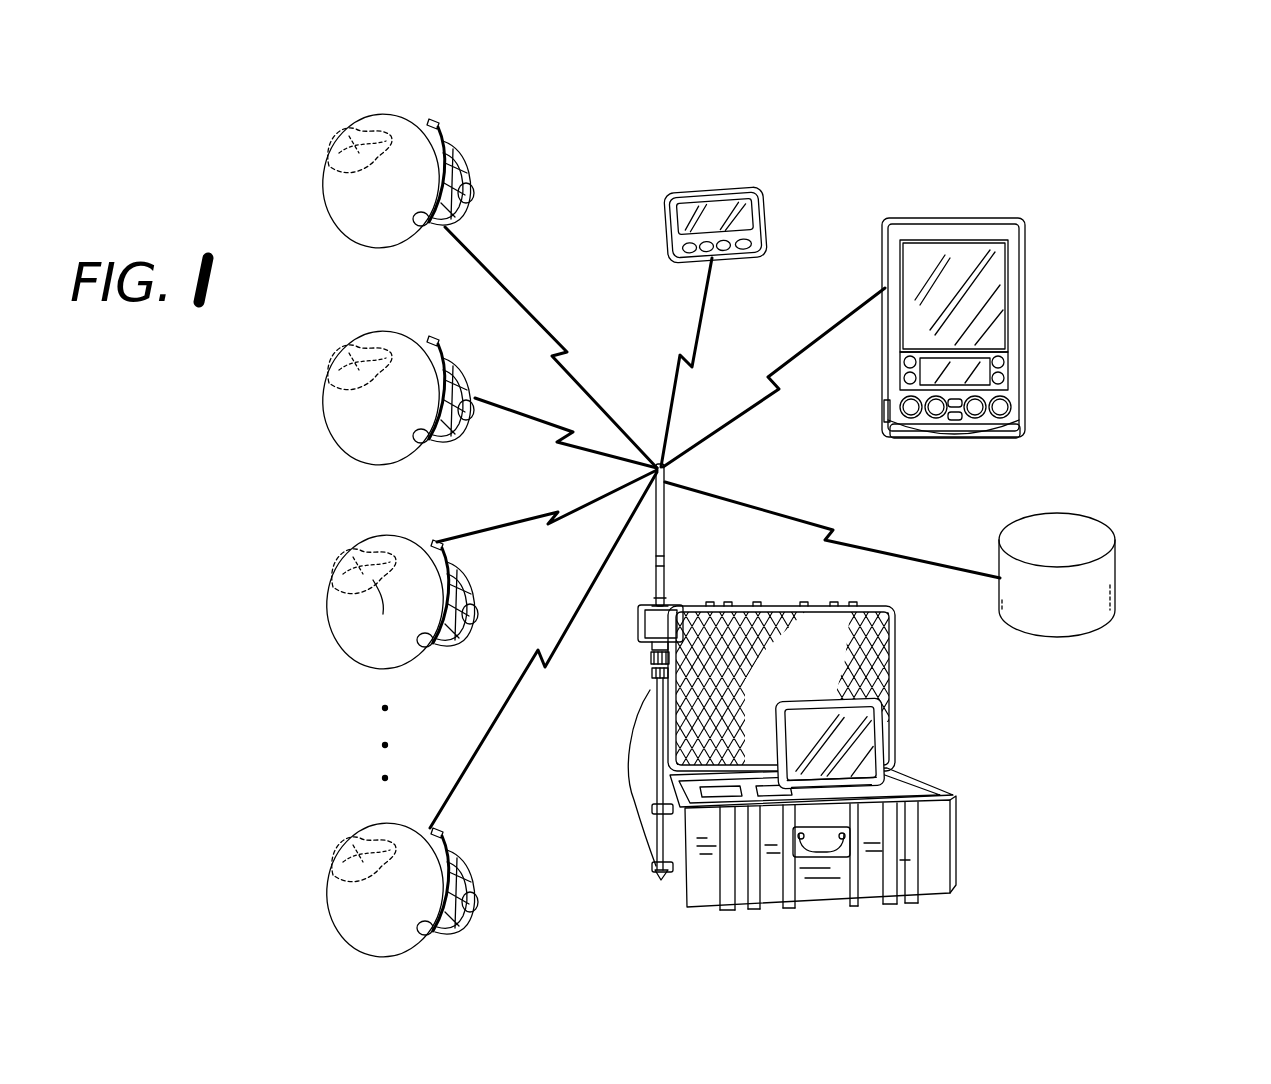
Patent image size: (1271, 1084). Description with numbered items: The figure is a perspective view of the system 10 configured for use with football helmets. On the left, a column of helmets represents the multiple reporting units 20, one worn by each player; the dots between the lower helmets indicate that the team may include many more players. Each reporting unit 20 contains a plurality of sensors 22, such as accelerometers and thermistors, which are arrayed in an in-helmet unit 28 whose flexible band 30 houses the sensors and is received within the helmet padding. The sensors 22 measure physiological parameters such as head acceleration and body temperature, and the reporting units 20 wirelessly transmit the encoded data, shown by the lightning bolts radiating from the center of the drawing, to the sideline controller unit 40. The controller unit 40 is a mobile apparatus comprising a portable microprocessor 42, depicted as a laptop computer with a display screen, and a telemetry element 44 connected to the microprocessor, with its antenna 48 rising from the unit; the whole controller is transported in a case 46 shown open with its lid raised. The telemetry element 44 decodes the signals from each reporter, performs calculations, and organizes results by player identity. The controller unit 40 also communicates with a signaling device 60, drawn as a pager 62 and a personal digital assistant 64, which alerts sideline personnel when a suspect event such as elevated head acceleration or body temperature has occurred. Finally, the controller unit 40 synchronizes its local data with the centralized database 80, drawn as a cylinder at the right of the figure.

The system 10 is at (1140, 297).
The reporting unit 20 is at (188, 590).
The sensor 22 is at (383, 600).
The in-helmet unit 28 is at (318, 405).
The flexible band 30 is at (324, 170).
The controller unit 40 is at (995, 769).
The portable microprocessor 42 is at (903, 745).
The telemetry element 44 is at (628, 679).
The case 46 is at (958, 851).
The antenna 48 is at (664, 548).
The signaling device 60 is at (917, 138).
The pager 62 is at (735, 196).
The personal digital assistant 64 is at (1018, 245).
The database 80 is at (1130, 572).